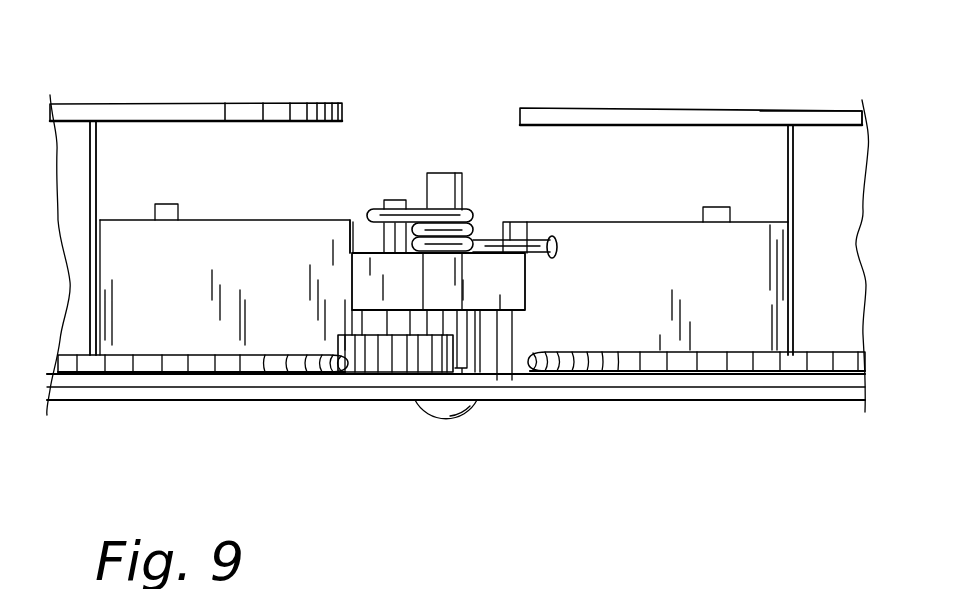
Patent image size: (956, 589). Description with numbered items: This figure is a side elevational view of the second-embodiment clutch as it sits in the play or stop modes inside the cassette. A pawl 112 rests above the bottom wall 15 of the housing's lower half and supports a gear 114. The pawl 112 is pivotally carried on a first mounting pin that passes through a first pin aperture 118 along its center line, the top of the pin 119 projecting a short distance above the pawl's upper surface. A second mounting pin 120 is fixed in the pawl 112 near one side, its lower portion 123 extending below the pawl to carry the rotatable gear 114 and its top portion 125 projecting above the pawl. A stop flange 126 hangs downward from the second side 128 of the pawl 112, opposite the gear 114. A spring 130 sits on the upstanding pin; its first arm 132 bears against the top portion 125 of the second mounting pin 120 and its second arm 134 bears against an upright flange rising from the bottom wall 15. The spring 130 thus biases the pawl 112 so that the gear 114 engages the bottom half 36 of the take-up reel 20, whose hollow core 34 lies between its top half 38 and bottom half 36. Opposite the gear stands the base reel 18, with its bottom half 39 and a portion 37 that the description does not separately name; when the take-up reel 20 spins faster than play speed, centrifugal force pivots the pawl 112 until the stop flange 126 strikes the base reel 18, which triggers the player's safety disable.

The bottom wall 15 is at (690, 401).
The base reel 18 is at (640, 102).
The take-up reel 20 is at (318, 102).
The hollow core 34 is at (97, 173).
The bottom half of the take-up reel 36 is at (200, 372).
The right conveyor belt 37 is at (740, 360).
The top half of the take-up reel 38 is at (283, 104).
The bottom half of the base reel 39 is at (746, 106).
The pawl 112 is at (493, 269).
The gear 114 is at (396, 323).
The first pin aperture 118 is at (437, 170).
The top of the pin 119 is at (465, 200).
The second mounting pin 120 is at (375, 244).
The lower portion of the second mounting pin 123 is at (385, 335).
The top portion of the second mounting pin 125 is at (378, 200).
The stop flange 126 is at (492, 372).
The second side of the pawl 128 is at (490, 302).
The spring 130 is at (479, 209).
The first arm of the spring 132 is at (417, 208).
The second arm of the spring 134 is at (551, 237).